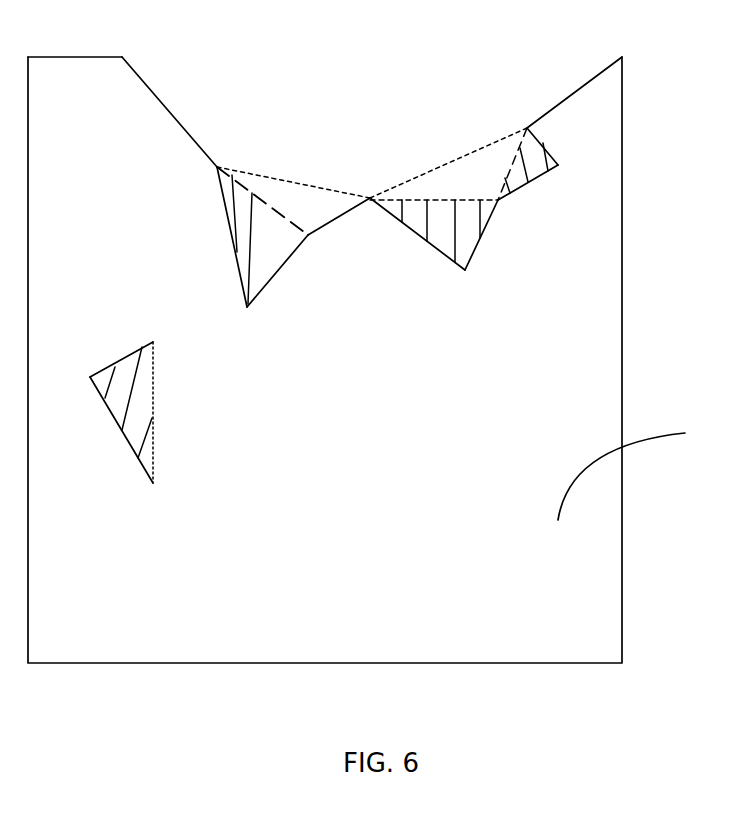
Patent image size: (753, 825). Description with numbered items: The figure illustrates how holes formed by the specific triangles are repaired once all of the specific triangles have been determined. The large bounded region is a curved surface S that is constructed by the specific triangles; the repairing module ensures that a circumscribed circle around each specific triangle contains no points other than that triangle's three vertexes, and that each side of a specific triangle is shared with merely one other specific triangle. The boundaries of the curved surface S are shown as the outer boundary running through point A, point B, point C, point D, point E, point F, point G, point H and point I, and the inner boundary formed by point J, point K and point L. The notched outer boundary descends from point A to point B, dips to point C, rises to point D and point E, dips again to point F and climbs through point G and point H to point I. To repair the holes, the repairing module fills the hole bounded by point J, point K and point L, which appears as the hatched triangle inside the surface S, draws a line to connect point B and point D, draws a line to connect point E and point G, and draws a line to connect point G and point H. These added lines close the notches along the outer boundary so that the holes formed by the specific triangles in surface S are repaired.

The point A is at (81, 41).
The point B is at (246, 127).
The point C is at (236, 256).
The point D is at (269, 237).
The point E is at (417, 181).
The point F is at (425, 252).
The point G is at (496, 199).
The point H is at (540, 171).
The point I is at (570, 111).
The point J is at (157, 429).
The point K is at (134, 393).
The point L is at (112, 416).
The curved surface S is at (371, 360).